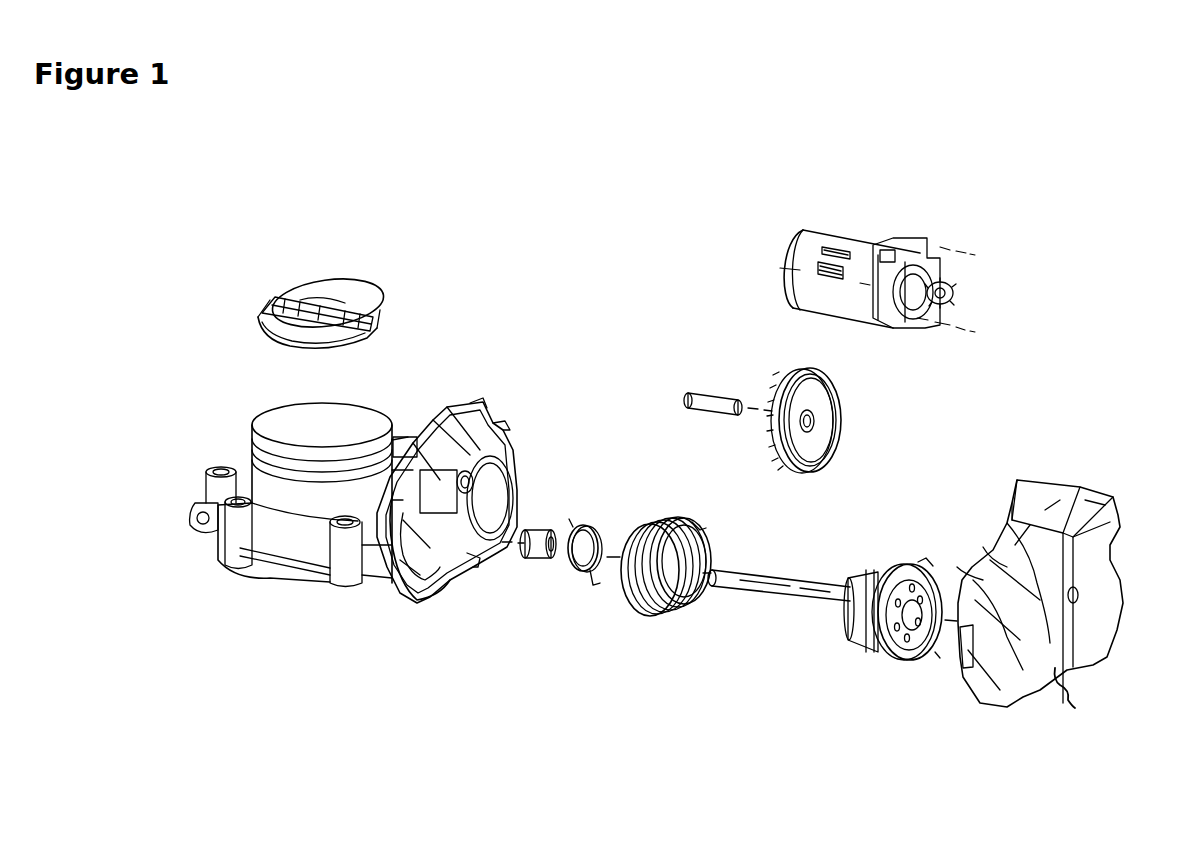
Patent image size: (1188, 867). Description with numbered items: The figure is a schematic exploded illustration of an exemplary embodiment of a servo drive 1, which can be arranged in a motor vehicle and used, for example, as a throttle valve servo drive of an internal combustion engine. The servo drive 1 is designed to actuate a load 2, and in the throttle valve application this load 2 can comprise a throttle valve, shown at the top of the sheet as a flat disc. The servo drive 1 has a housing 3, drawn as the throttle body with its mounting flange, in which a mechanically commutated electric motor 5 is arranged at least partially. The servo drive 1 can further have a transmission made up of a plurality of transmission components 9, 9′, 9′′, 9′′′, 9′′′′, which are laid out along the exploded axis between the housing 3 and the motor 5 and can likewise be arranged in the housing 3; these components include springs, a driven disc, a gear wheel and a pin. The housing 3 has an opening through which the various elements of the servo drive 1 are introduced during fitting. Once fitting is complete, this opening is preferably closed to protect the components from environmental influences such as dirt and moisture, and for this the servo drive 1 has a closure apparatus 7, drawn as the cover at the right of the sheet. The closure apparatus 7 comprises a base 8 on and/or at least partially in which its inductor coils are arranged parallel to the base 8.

The servo drive 1 is at (1065, 228).
The load 2 is at (285, 333).
The housing 3 is at (300, 522).
The mechanically commutated electric motor 5 is at (872, 262).
The closure apparatus 7 is at (1002, 663).
The base 8 is at (1072, 717).
The transmission component 9 is at (660, 613).
The transmission component 9′ is at (565, 572).
The transmission component 9′′ is at (878, 650).
The transmission component 9′′′ is at (822, 430).
The transmission component 9′′′′ is at (690, 389).